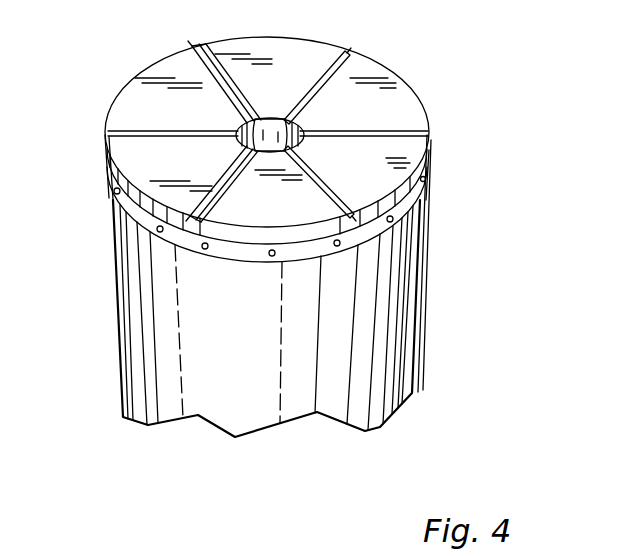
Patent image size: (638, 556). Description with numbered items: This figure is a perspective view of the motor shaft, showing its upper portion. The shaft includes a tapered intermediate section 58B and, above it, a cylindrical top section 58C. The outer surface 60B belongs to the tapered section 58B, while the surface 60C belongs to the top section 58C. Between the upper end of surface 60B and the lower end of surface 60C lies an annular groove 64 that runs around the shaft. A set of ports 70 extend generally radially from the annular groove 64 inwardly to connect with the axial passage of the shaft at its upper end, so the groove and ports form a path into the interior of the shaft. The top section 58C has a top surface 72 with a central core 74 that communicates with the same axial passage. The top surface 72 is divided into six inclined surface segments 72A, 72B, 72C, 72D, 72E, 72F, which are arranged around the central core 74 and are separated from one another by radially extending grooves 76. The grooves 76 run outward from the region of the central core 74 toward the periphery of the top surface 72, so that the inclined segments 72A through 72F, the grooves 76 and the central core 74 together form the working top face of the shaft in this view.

The top surface 72 is at (158, 80).
The inclined surface segment 72A is at (294, 204).
The inclined surface segment 72B is at (210, 171).
The inclined surface segment 72C is at (204, 118).
The inclined surface segment 72D is at (328, 72).
The inclined surface segment 72E is at (380, 116).
The inclined surface segment 72F is at (382, 171).
The central core 74 is at (266, 130).
The radially extending grooves 76 is at (213, 68).
The ports 70 is at (113, 192).
The annular groove 64 is at (424, 196).
The surface of shaft section 58C 60C is at (430, 165).
The surface of tapered section 58B 60B is at (400, 332).
The cylindrical top section 58C is at (140, 204).
The tapered intermediate section 58B is at (142, 302).